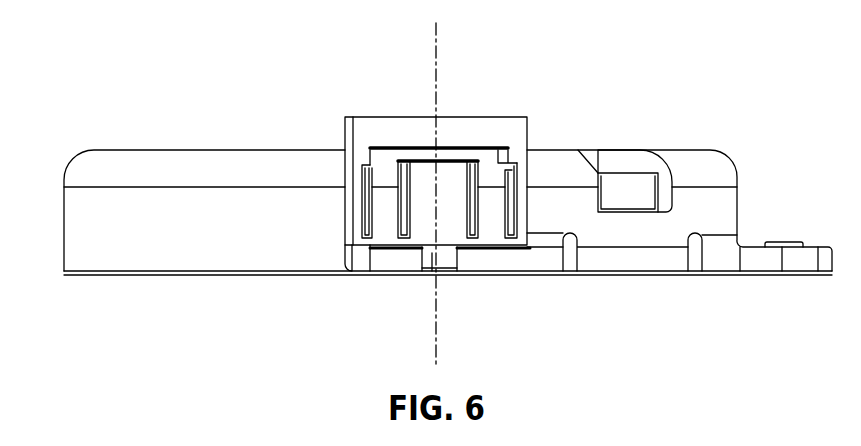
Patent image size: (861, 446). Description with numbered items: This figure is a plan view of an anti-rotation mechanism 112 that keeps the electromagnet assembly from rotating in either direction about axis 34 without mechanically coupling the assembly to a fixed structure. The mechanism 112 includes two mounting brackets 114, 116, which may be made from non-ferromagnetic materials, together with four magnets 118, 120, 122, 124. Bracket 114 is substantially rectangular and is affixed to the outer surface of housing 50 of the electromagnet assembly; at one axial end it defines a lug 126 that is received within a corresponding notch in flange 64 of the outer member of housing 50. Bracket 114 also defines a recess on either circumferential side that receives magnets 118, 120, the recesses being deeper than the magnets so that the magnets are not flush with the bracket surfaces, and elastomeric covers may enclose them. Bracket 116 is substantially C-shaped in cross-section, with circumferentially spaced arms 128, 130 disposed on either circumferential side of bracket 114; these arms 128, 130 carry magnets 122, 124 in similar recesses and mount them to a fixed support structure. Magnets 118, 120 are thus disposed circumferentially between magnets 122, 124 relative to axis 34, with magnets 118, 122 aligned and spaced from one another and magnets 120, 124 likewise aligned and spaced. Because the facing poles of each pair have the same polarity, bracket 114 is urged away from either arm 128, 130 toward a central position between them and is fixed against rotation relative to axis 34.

The housing 50 is at (117, 166).
The axis 34 is at (437, 60).
The anti-rotation mechanism 112 is at (322, 136).
The mounting bracket 116 is at (404, 133).
The arm 128 is at (352, 178).
The magnet 122 is at (364, 211).
The magnet 124 is at (513, 207).
The arm 130 is at (523, 193).
The magnet 118 is at (403, 217).
The magnet 120 is at (502, 236).
The mounting bracket 114 is at (456, 236).
The lug 126 is at (432, 253).
The flange 64 is at (556, 263).